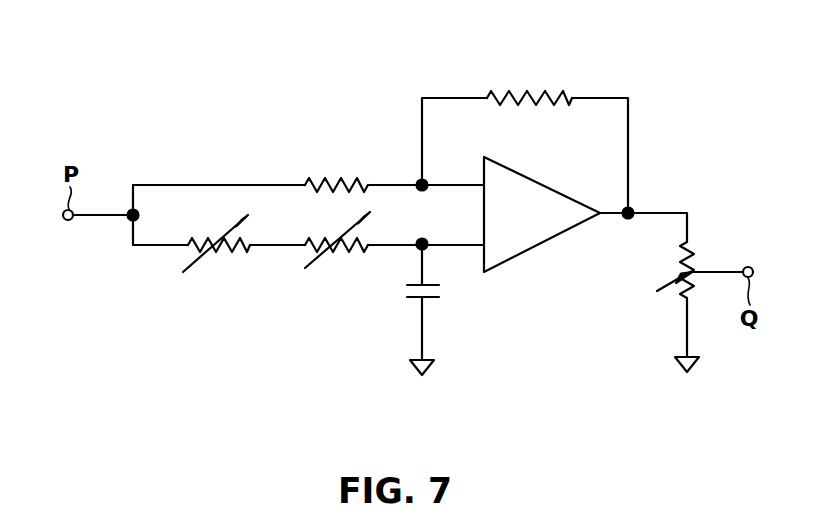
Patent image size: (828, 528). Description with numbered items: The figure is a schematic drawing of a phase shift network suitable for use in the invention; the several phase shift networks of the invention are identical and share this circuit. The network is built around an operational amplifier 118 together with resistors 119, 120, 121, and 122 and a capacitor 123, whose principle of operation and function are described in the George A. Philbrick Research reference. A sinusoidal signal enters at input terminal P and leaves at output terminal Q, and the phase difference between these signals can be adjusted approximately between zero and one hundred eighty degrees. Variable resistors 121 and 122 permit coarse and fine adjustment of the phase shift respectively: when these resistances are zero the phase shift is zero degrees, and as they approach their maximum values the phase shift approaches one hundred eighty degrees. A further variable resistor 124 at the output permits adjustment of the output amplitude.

The operational amplifier 118 is at (499, 226).
The resistor 119 is at (331, 178).
The resistor 120 is at (527, 90).
The variable resistor 121 is at (222, 250).
The variable resistor 122 is at (338, 250).
The capacitor 123 is at (432, 298).
The variable resistor 124 is at (658, 290).